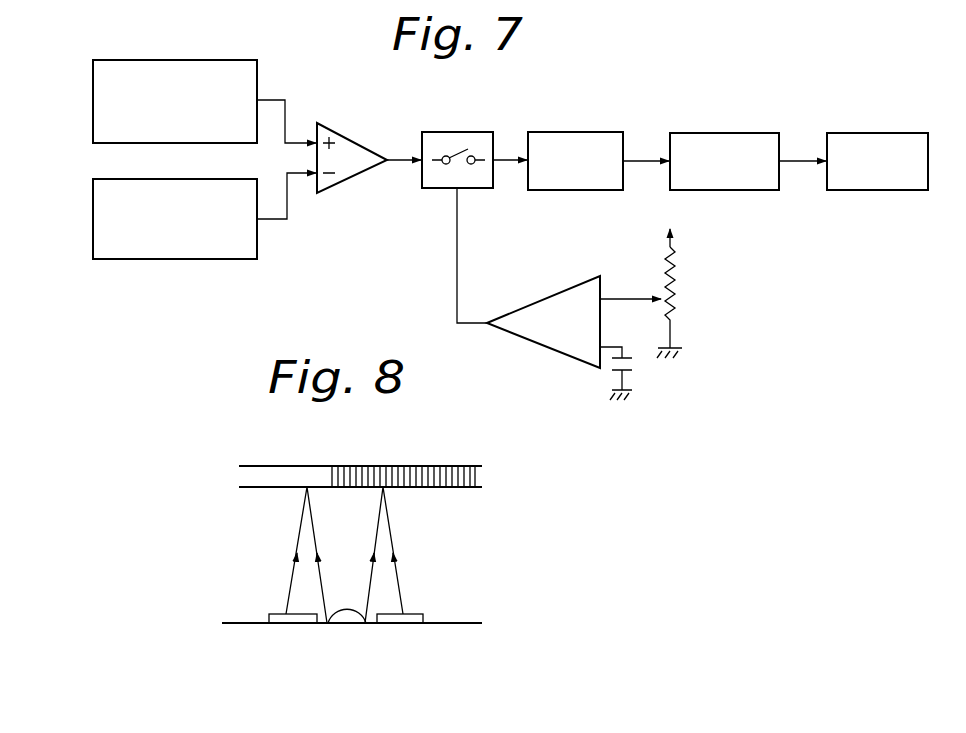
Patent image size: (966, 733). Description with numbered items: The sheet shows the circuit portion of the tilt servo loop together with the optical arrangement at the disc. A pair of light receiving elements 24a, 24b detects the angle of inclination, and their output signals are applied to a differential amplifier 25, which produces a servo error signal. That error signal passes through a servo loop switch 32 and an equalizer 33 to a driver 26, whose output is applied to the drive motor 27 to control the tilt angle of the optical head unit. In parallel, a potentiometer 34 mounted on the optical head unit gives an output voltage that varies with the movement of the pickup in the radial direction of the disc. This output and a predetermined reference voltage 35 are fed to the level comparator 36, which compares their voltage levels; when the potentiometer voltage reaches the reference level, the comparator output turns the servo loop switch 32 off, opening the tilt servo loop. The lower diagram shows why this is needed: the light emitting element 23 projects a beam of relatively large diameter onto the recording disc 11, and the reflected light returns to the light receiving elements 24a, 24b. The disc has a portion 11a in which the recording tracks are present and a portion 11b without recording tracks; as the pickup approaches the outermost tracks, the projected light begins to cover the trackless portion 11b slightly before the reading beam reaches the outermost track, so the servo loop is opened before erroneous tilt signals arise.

In FIG. 7, the light receiving element 24a is at (172, 60).
In FIG. 8, the light receiving element 24a is at (285, 624).
In FIG. 7, the light receiving element 24b is at (165, 259).
In FIG. 8, the light receiving element 24b is at (416, 624).
In FIG. 7, the differential amplifier 25 is at (354, 142).
In FIG. 7, the servo loop switch 32 is at (462, 132).
In FIG. 7, the equalizer 33 is at (588, 132).
In FIG. 7, the driver 26 is at (728, 133).
In FIG. 7, the drive motor 27 is at (873, 133).
In FIG. 7, the level comparator 36 is at (557, 293).
In FIG. 7, the potentiometer 34 is at (676, 268).
In FIG. 7, the predetermined reference voltage 35 is at (636, 364).
In FIG. 8, the recording disc 11 is at (456, 461).
In FIG. 8, the portion of the disc with recording tracks 11a is at (440, 480).
In FIG. 8, the portion of the disc without recording tracks 11b is at (257, 485).
In FIG. 8, the light emitting element 23 is at (350, 624).